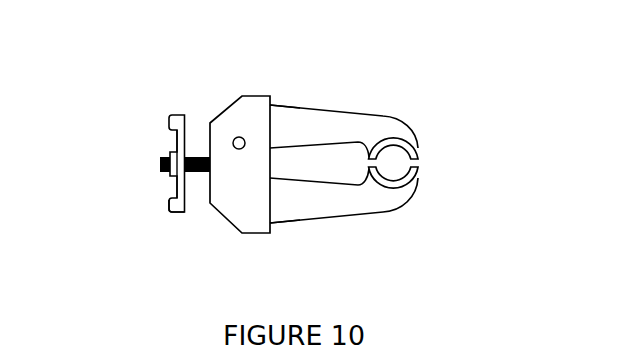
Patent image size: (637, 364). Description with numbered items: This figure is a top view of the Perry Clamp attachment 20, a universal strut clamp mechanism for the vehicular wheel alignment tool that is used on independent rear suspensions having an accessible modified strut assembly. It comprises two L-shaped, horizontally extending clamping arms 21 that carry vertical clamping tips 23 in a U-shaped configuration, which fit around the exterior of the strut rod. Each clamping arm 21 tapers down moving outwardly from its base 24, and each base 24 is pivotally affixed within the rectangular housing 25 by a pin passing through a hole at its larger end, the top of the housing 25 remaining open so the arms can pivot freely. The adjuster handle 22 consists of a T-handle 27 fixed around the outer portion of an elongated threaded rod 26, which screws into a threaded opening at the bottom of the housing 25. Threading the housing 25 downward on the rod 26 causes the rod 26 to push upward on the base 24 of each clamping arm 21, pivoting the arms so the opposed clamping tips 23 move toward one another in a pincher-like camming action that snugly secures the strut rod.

The Perry Clamp attachment 20 is at (298, 248).
The clamping arm 21 is at (345, 110).
The adjuster handle 22 is at (165, 153).
The clamping tip 23 is at (415, 150).
The base 24 is at (290, 107).
The housing 25 is at (225, 222).
The elongated threaded rod 26 is at (193, 158).
The T-handle 27 is at (172, 212).